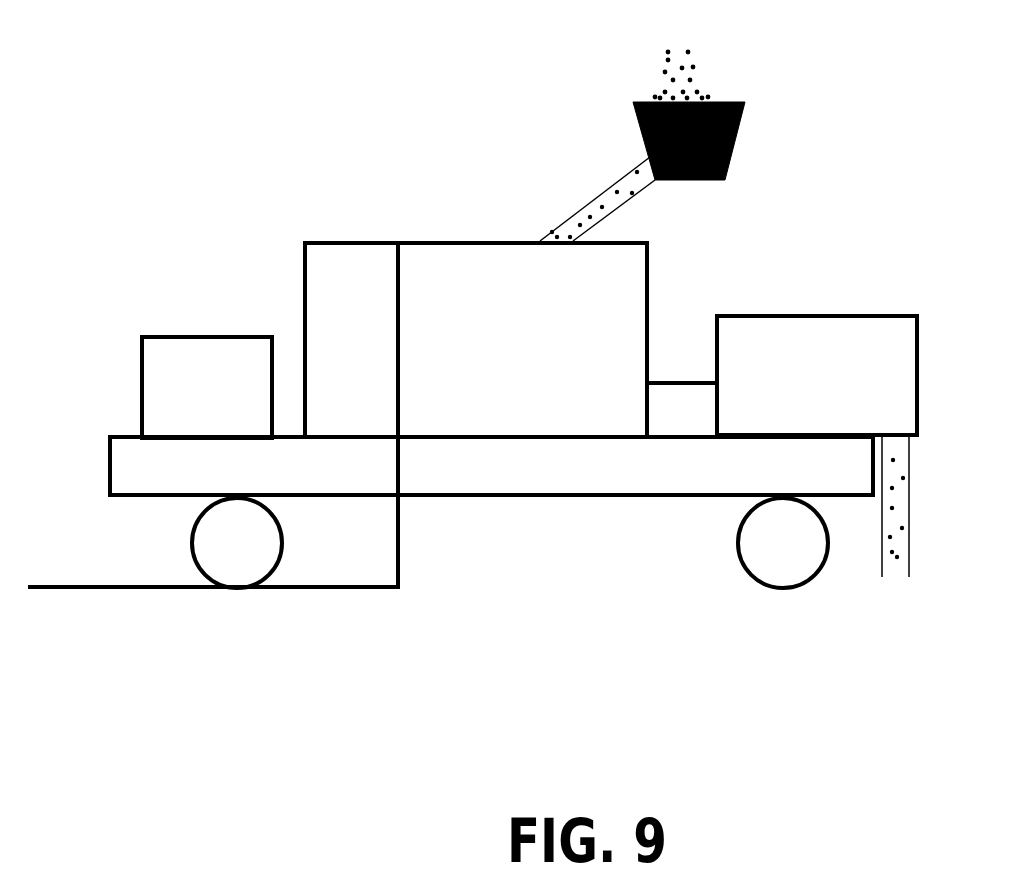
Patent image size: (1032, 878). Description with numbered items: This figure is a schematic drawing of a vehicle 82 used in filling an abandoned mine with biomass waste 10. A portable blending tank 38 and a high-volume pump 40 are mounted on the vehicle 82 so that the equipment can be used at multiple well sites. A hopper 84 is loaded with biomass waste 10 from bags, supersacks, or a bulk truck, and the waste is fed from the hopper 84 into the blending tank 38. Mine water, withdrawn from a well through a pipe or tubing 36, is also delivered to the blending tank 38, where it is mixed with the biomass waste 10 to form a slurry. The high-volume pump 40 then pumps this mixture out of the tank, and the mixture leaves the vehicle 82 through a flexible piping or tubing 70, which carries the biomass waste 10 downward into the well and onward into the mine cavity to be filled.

The biomass waste 10 is at (722, 72).
The pipe or tubing 36 is at (410, 553).
The blending tank 38 is at (476, 340).
The high-volume pump 40 is at (817, 375).
The flexible piping or tubing 70 is at (868, 554).
The vehicle 82 is at (472, 377).
The hopper 84 is at (738, 153).